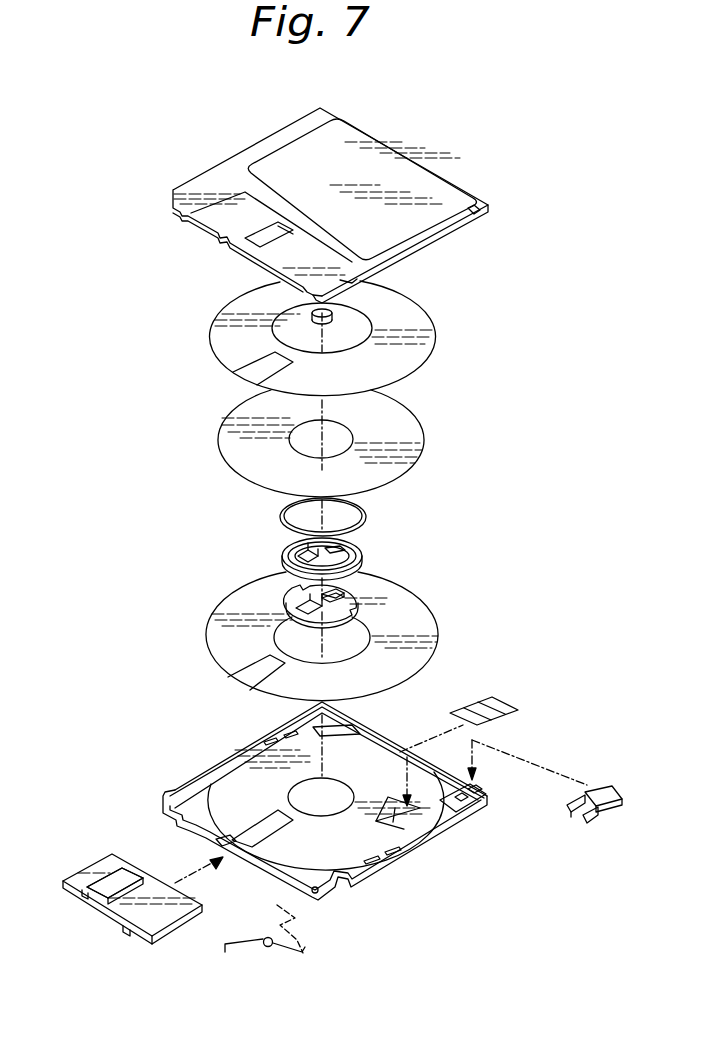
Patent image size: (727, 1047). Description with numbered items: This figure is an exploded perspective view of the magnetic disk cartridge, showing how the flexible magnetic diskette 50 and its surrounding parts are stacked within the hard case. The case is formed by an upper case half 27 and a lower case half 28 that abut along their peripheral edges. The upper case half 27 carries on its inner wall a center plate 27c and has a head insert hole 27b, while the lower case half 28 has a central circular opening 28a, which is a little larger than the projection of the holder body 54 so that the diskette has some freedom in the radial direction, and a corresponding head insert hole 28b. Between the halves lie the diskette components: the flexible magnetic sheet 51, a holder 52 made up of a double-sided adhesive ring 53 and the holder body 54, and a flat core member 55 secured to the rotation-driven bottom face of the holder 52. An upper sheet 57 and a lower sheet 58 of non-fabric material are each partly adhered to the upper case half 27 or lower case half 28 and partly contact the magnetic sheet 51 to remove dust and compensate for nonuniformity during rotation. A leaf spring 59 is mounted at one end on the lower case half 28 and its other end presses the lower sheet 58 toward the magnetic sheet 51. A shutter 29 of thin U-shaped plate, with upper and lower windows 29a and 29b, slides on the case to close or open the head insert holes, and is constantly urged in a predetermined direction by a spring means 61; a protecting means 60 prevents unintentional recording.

The upper case half 27 is at (223, 163).
The head insert hole 27b is at (248, 248).
The center plate 27c is at (334, 314).
The upper sheet 57 is at (222, 326).
The flexible magnetic diskette 50 is at (160, 490).
The flexible magnetic sheet 51 is at (240, 466).
The holder 52 is at (201, 508).
The double-sided adhesive ring 53 is at (280, 518).
The holder body 54 is at (280, 558).
The flat core member 55 is at (288, 598).
The lower sheet 58 is at (217, 640).
The lower case half 28 is at (228, 760).
The circular opening 28a is at (335, 790).
The head insert hole 28b is at (262, 833).
The shutter 29 is at (82, 870).
The upper window 29a is at (125, 880).
The lower window 29b is at (115, 883).
The leaf spring 59 is at (463, 710).
The protecting means 60 is at (597, 786).
The spring means 61 is at (243, 940).